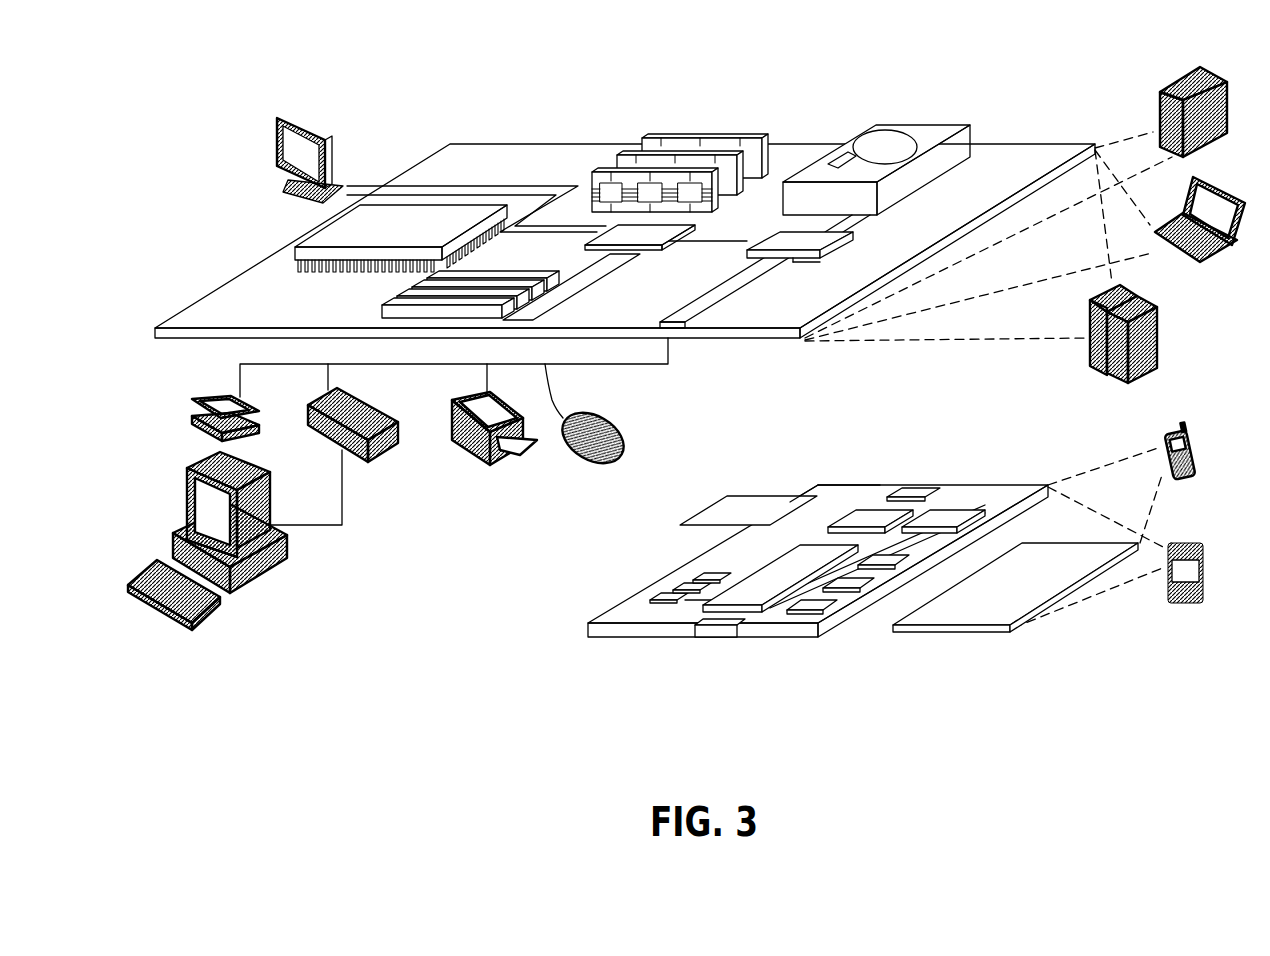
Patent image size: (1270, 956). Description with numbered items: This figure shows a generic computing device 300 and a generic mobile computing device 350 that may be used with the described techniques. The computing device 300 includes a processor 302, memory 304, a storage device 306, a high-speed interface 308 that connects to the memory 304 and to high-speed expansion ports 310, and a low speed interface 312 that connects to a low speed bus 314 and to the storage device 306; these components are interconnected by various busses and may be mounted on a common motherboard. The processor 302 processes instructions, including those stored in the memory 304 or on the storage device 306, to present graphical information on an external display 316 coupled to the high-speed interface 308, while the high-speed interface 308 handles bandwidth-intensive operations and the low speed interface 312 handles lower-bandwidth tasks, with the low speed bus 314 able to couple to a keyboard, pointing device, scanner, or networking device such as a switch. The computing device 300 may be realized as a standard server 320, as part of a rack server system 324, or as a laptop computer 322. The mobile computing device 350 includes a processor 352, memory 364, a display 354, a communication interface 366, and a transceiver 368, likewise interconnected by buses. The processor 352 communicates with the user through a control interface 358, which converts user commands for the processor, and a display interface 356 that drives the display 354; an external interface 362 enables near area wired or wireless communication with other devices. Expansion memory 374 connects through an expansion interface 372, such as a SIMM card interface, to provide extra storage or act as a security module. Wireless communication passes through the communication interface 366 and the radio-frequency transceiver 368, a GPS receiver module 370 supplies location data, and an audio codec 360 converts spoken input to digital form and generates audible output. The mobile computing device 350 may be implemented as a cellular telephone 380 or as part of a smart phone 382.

The generic computing device 300 is at (408, 76).
The processor 302 is at (308, 232).
The memory 304 is at (690, 138).
The storage device 306 is at (876, 126).
The high-speed interface 308 is at (642, 250).
The high-speed expansion ports 310 is at (384, 305).
The low speed interface 312 is at (778, 233).
The low speed bus 314 is at (670, 320).
The display 316 is at (284, 117).
The standard server 320 is at (1168, 85).
The laptop computer 322 is at (1228, 248).
The rack server system 324 is at (1158, 335).
The generic mobile computing device 350 is at (538, 654).
The processor 352 is at (762, 570).
The display 354 is at (1066, 544).
The display interface 356 is at (830, 608).
The control interface 358 is at (858, 590).
The audio codec 360 is at (905, 557).
The external interface 362 is at (718, 640).
The memory 364 is at (680, 593).
The communication interface 366 is at (862, 507).
The transceiver 368 is at (950, 508).
The GPS receiver module 370 is at (915, 488).
The expansion interface 372 is at (813, 489).
The expansion memory 374 is at (731, 493).
The cellular telephone 380 is at (1170, 432).
The smart phone 382 is at (1192, 548).